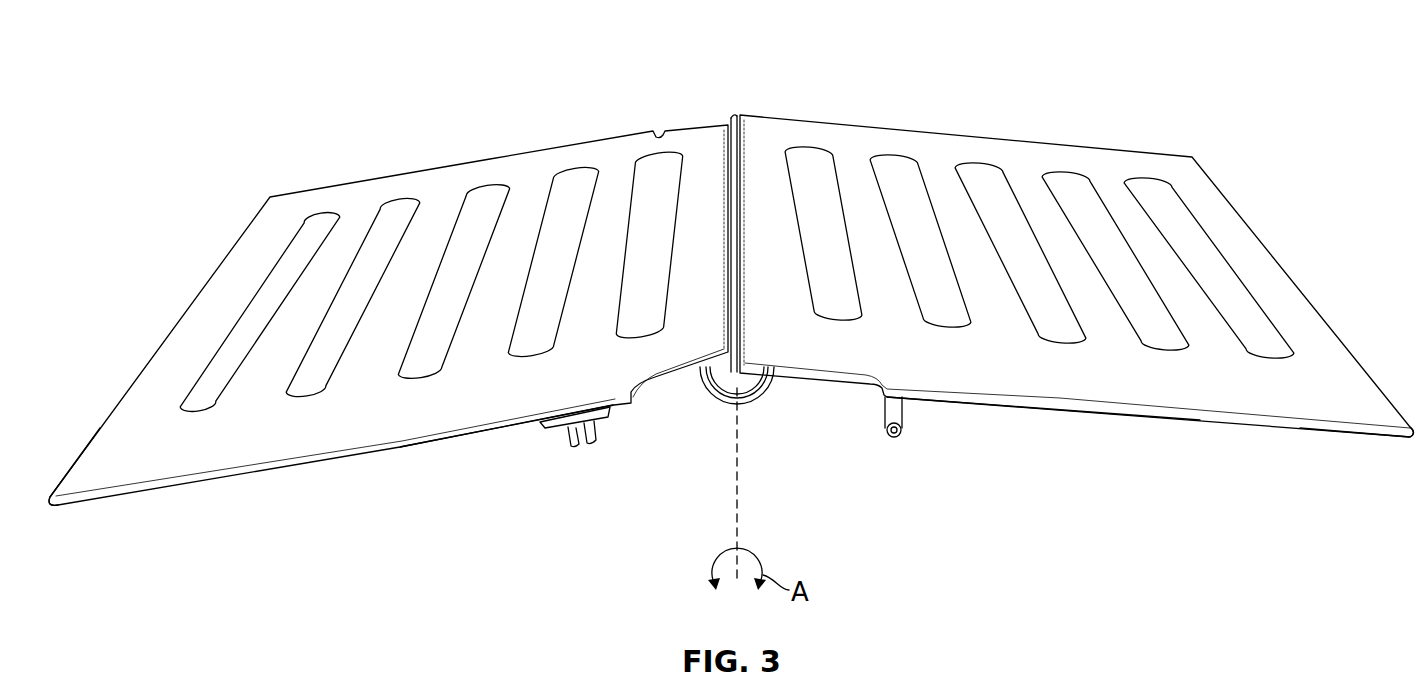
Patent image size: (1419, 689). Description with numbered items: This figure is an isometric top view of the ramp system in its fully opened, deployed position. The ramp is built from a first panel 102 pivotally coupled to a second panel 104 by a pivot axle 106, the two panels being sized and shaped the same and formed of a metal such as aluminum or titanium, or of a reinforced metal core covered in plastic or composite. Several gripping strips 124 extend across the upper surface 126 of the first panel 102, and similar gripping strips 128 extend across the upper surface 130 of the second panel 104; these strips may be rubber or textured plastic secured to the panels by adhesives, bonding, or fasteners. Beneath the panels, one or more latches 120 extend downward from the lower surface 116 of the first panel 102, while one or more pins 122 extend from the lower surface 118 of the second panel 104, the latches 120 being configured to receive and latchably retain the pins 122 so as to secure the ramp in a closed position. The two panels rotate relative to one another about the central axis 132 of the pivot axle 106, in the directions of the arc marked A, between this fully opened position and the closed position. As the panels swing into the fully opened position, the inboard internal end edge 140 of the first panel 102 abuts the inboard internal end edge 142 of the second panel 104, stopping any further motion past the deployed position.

The first panel 102 is at (168, 372).
The second panel 104 is at (1308, 335).
The pivot axle 106 is at (772, 386).
The lower surface of the first panel 116 is at (327, 458).
The lower surface of the second panel 118 is at (1125, 415).
The latches 120 is at (573, 424).
The pins 122 is at (907, 430).
The gripping strips 124 is at (303, 253).
The upper surface of the first panel 126 is at (162, 453).
The gripping strips 128 is at (900, 177).
The upper surface of the second panel 130 is at (1233, 387).
The central axis 132 is at (738, 496).
The inboard internal end edge 140 is at (730, 122).
The inboard internal end edge 142 is at (739, 115).